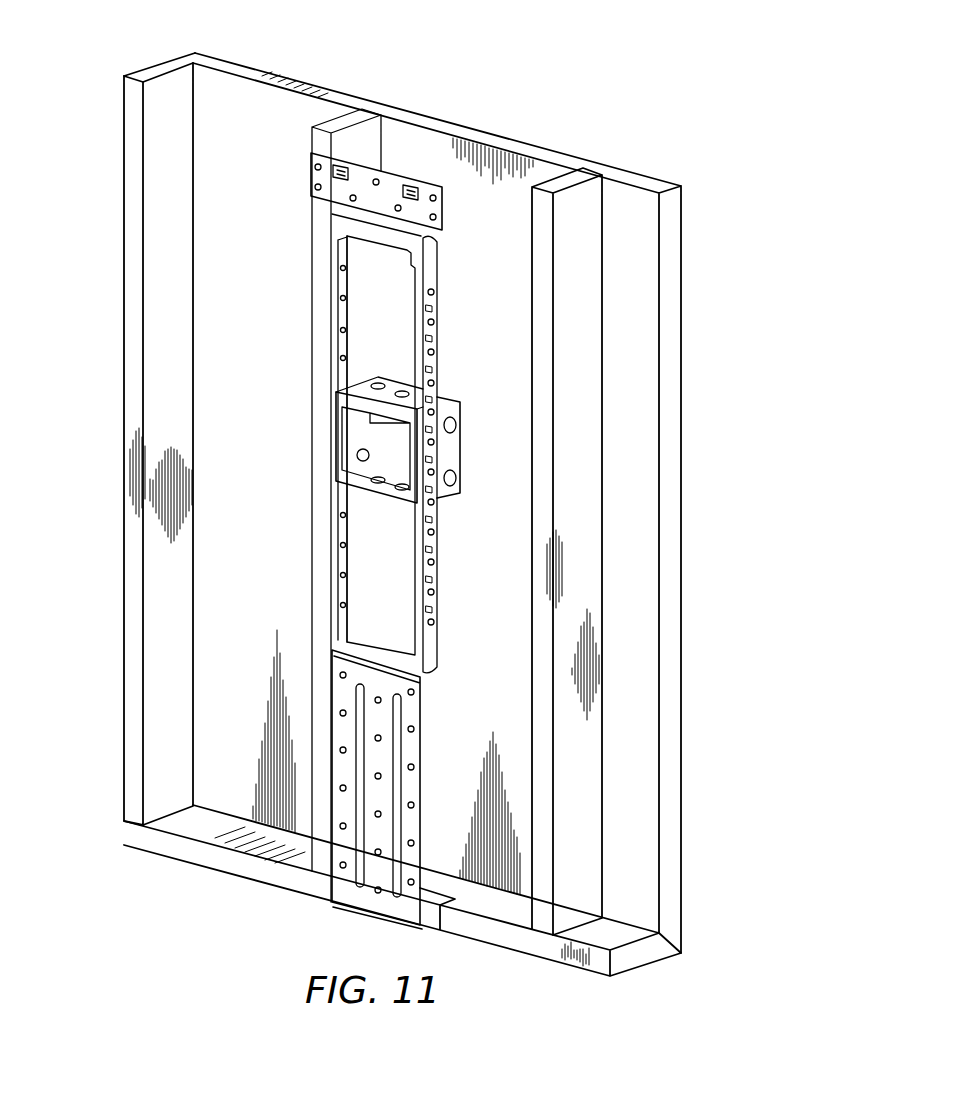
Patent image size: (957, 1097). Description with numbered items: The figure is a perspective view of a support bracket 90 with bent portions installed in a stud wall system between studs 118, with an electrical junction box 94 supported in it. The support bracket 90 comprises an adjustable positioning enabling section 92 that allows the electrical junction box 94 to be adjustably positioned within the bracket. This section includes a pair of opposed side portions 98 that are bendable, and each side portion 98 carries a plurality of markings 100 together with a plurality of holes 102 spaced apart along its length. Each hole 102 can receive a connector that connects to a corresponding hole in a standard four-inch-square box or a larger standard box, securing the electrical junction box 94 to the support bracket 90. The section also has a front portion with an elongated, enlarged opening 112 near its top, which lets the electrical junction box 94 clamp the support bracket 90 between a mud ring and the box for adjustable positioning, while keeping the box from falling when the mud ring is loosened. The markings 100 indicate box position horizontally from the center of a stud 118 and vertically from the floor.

The support bracket 90 is at (385, 207).
The adjustable positioning enabling section 92 is at (433, 259).
The electrical junction box 94 is at (455, 440).
The side portion 98 is at (436, 648).
The markings 100 is at (435, 552).
The holes 102 is at (433, 568).
The opening 112 is at (385, 572).
The stud 118 is at (130, 470).